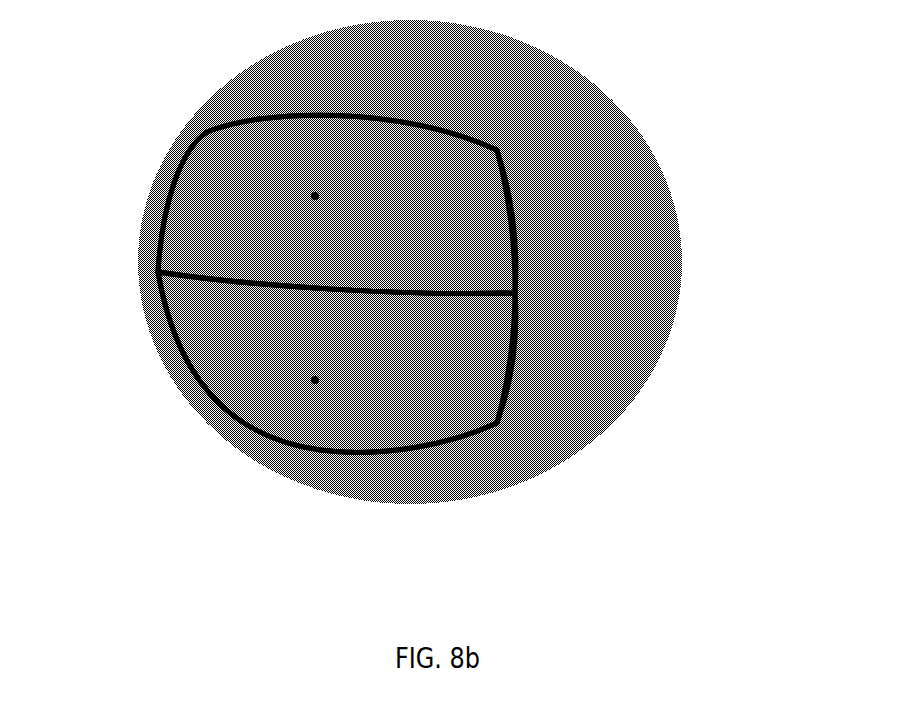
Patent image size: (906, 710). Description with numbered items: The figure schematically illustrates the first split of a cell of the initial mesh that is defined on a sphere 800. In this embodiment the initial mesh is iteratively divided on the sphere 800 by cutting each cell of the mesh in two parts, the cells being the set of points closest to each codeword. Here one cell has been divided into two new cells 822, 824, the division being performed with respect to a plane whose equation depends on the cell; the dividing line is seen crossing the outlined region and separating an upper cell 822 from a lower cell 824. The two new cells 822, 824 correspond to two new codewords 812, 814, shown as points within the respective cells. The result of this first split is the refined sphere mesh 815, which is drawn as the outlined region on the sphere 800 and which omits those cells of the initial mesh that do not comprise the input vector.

The sphere 800 is at (153, 516).
The codeword 812 is at (313, 196).
The codeword 814 is at (312, 380).
The refined sphere mesh 815 is at (497, 150).
The cell 822 is at (468, 244).
The cell 824 is at (470, 396).